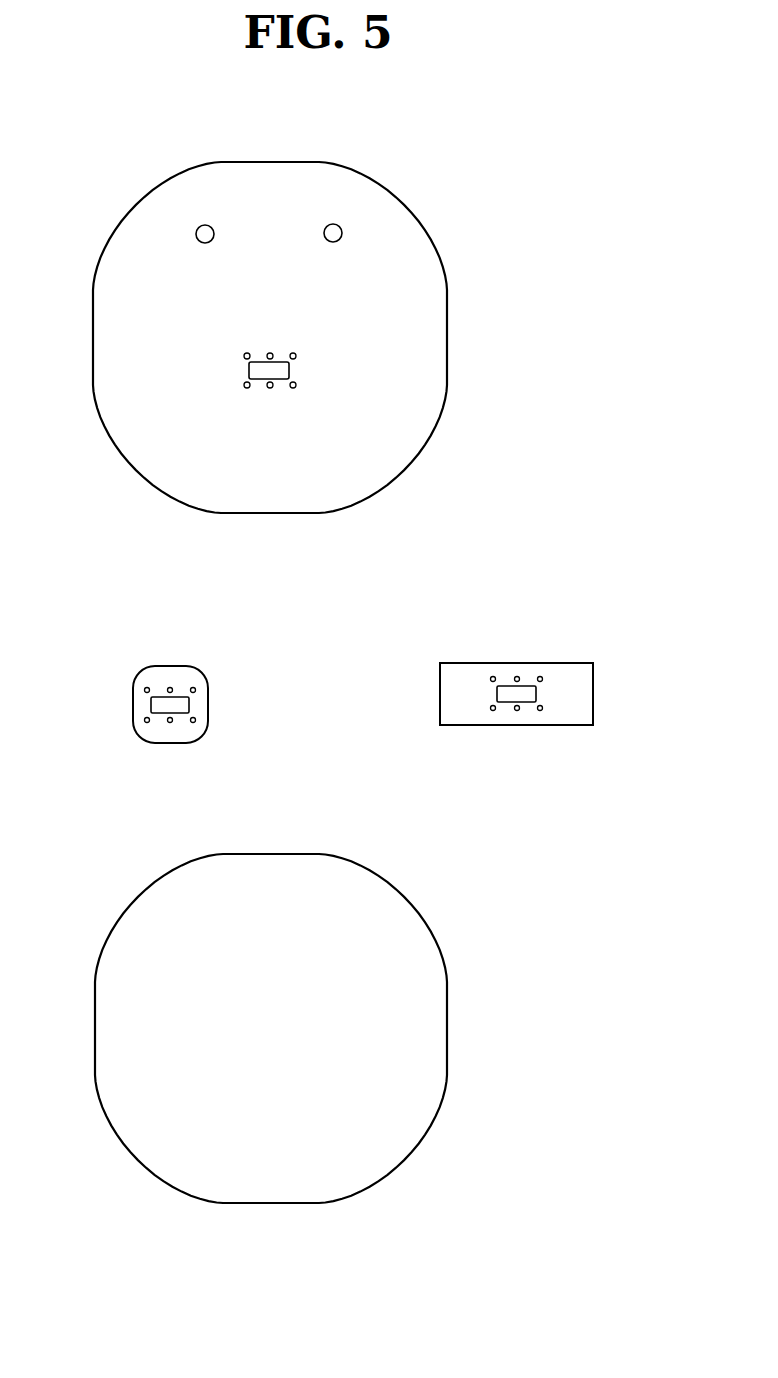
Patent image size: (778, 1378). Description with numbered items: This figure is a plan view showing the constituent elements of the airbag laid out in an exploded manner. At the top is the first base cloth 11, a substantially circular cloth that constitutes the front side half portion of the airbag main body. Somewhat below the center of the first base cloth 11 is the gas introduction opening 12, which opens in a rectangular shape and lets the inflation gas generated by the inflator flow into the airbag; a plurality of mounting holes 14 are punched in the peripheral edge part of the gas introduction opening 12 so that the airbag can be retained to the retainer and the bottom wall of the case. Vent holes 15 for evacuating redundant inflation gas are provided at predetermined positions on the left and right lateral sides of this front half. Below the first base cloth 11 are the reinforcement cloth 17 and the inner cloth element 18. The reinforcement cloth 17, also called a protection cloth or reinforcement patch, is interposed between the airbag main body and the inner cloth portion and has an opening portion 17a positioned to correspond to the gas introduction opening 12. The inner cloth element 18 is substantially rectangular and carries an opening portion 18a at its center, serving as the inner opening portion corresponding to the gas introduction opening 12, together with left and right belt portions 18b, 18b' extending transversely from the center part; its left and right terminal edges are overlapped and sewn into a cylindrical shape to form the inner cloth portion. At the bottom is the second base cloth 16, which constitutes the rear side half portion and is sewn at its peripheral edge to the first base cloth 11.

The first base cloth 11 is at (114, 207).
The gas introduction opening 12 is at (278, 371).
The mounting holes 14 is at (268, 387).
The vent holes 15 is at (203, 231).
The second base cloth 16 is at (425, 902).
The reinforcement cloth 17 is at (140, 668).
The opening portion 17a is at (183, 707).
The inner cloth element 18 is at (547, 654).
The opening portion 18a is at (507, 699).
The left belt portion 18b is at (401, 705).
The right belt portion 18b' is at (638, 709).